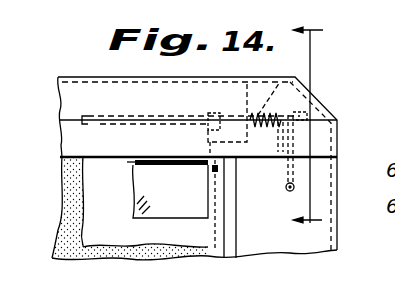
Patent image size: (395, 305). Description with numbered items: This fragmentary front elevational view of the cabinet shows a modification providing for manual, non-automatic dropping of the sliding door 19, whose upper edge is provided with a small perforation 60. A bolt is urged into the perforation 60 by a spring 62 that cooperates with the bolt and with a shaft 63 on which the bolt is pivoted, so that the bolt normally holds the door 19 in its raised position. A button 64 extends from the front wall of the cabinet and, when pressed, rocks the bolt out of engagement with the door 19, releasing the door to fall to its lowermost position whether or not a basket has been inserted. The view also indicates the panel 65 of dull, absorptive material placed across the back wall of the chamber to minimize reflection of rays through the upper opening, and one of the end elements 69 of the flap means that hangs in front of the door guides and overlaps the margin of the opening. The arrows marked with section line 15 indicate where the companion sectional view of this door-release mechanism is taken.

The section line 15- 15 is at (312, 126).
The door 19 is at (100, 216).
The perforation 60 is at (225, 172).
The spring 62 is at (283, 78).
The shaft 63 is at (197, 163).
The button 64 is at (287, 191).
The panel 65 is at (70, 183).
The end elements 69 is at (184, 200).